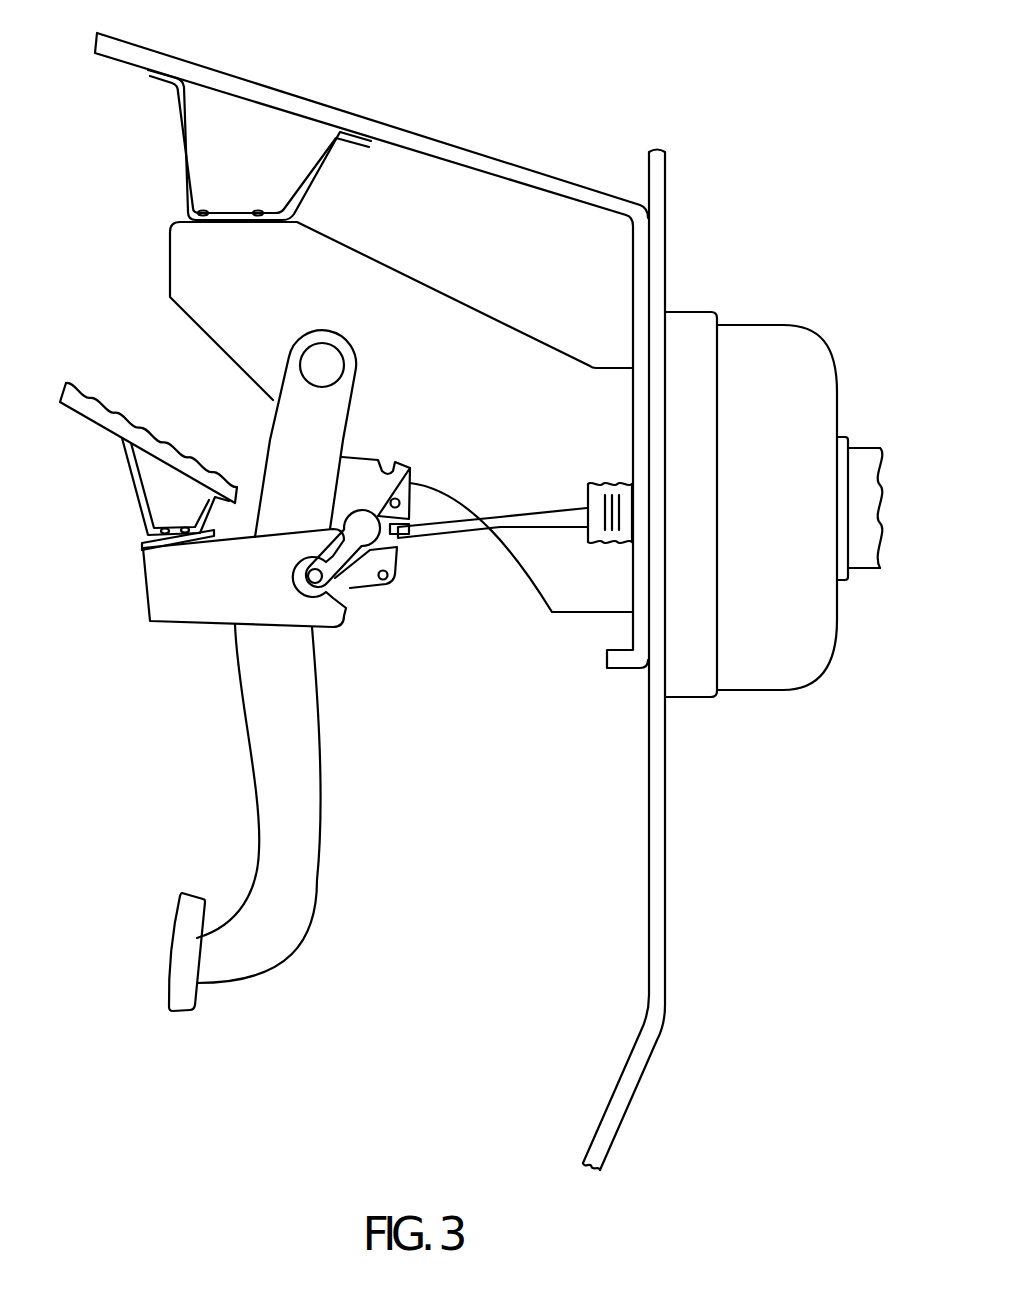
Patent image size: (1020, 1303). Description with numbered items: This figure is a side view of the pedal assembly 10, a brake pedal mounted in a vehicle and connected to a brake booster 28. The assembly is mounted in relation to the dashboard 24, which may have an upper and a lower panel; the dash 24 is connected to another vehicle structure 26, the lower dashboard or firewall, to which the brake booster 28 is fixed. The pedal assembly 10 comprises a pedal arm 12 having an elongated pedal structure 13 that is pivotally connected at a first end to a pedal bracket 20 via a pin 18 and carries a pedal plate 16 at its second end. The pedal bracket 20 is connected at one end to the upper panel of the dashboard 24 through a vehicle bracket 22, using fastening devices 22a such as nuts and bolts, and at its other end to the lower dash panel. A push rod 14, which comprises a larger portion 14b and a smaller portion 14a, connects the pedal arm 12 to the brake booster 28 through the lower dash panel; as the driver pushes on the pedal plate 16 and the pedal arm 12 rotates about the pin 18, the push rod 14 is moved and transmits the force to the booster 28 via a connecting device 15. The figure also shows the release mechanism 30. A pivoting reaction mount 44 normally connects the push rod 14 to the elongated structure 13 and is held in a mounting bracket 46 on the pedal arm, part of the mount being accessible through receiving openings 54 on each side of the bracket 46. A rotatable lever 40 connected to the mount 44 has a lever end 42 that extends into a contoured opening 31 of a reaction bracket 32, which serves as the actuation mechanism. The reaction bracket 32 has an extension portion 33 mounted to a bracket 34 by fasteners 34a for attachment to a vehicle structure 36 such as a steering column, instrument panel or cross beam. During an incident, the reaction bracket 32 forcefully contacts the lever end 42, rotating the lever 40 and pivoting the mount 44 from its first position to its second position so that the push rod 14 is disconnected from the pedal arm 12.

The pedal assembly 10 is at (134, 773).
The pedal arm 12 is at (265, 669).
The elongated pedal structure 13 is at (290, 900).
The push rod 14 is at (469, 507).
The smaller portion 14a is at (400, 528).
The larger portion 14b is at (560, 508).
The connecting device 15 is at (608, 544).
The pedal plate 16 is at (187, 918).
The pin 18 is at (322, 365).
The pedal bracket 20 is at (340, 272).
The vehicle bracket 22 is at (178, 151).
The fastening devices 22a is at (258, 208).
The dashboard 24 is at (152, 60).
The vehicle structure 26 is at (650, 868).
The brake booster 28 is at (748, 688).
The release mechanism 30 is at (185, 526).
The opening 31 is at (289, 577).
The reaction bracket 32 is at (189, 613).
The extension portion 33 is at (142, 547).
The bracket 34 is at (148, 453).
The fasteners 34a is at (165, 526).
The vehicle structure 36 is at (85, 403).
The rotatable lever 40 is at (392, 542).
The lever end 42 is at (327, 581).
The pivoting reaction mount 44 is at (397, 552).
The mounting bracket 46 is at (365, 464).
The receiving openings 54 is at (397, 568).